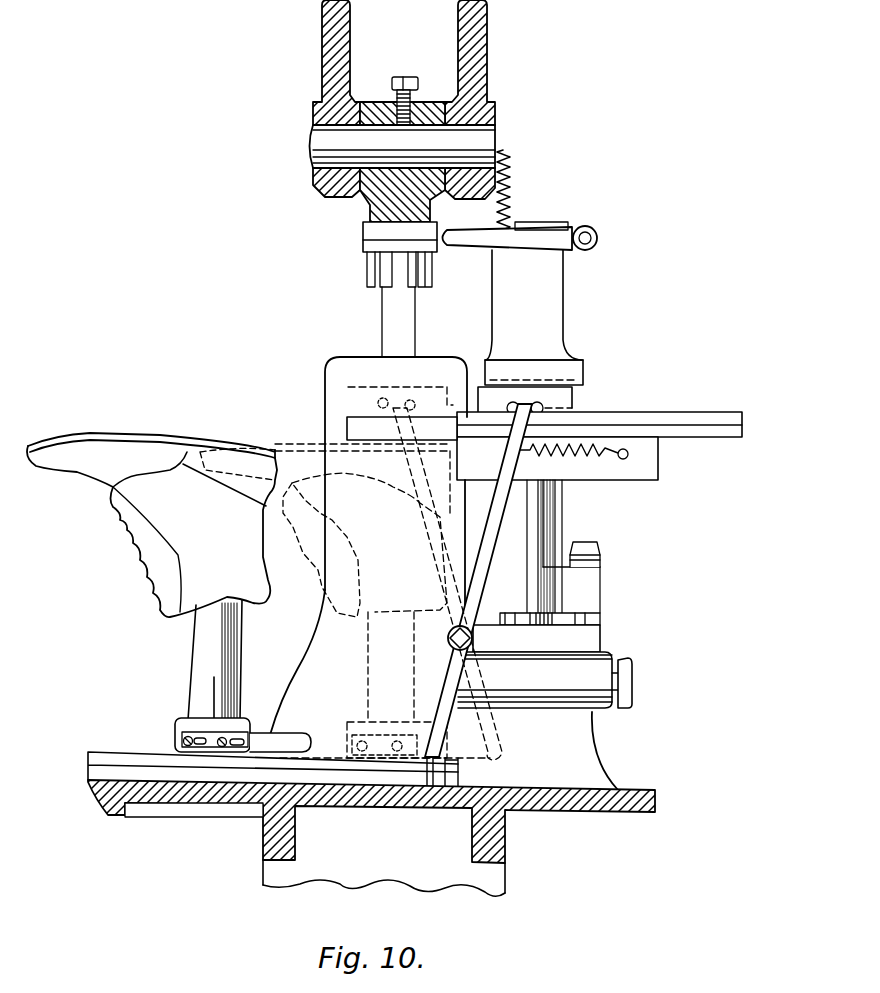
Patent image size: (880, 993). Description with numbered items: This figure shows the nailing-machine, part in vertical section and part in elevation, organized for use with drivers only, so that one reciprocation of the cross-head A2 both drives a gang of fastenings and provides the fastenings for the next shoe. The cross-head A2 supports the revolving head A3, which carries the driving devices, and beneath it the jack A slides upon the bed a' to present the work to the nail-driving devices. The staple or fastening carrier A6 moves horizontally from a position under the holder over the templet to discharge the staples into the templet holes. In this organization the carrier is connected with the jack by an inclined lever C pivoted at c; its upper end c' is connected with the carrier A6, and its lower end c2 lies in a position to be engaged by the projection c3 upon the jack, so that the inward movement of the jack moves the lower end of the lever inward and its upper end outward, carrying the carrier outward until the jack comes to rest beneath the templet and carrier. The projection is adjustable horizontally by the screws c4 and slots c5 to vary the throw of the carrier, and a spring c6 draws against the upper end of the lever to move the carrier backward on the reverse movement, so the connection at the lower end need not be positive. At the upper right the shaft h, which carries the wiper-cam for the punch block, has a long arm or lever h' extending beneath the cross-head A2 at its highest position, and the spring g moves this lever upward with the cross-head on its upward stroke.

The cross-head A2 is at (414, 99).
The revolving head A3 is at (377, 195).
The spring g is at (512, 193).
The shaft h is at (535, 236).
The long arm or lever h' is at (530, 330).
The upper end of lever c' is at (564, 389).
The staple or fastening carrier A6 is at (599, 434).
The spring c6 is at (568, 461).
The inclined lever C is at (486, 546).
The pivot c is at (472, 638).
The jack A is at (200, 678).
The slots c5 is at (201, 737).
The screws c4 is at (234, 738).
The projection c3 is at (296, 744).
The bed a' is at (356, 824).
The lower end of lever c2 is at (426, 760).